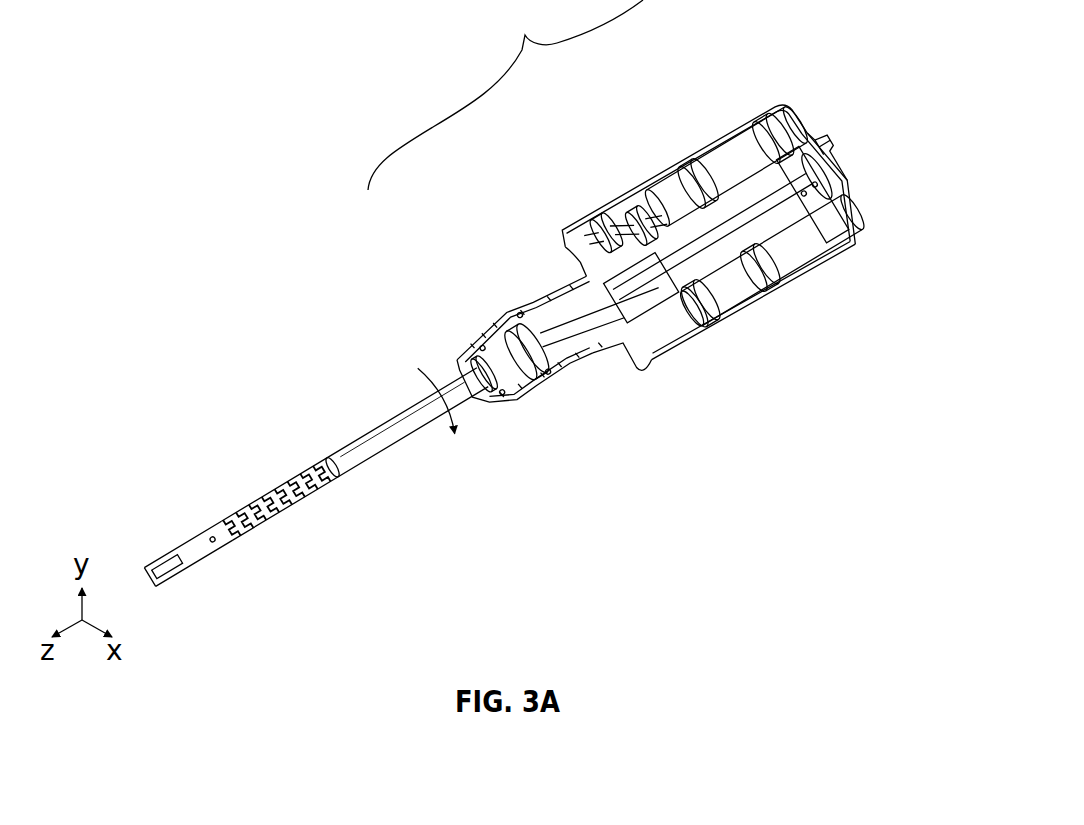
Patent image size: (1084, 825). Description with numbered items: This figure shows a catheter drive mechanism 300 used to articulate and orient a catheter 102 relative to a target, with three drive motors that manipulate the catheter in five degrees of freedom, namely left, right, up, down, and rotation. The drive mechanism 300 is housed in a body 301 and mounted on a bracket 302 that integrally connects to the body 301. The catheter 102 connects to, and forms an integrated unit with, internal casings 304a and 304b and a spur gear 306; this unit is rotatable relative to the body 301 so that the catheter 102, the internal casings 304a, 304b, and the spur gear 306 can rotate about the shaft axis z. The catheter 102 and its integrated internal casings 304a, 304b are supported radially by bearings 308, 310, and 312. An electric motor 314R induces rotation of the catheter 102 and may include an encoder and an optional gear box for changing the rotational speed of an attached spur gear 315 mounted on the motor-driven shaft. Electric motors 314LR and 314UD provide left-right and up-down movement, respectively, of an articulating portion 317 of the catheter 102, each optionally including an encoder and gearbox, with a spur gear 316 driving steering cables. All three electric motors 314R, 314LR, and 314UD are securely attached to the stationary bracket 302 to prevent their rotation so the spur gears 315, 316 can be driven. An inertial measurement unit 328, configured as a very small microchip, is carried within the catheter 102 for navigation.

The catheter drive mechanism 300 is at (525, 35).
The catheter 102 is at (368, 474).
The body 301 is at (793, 290).
The bracket 302 is at (832, 240).
The internal casing 304a is at (593, 357).
The internal casing 304b is at (826, 140).
The spur gear 306 is at (836, 147).
The bearing 308 is at (469, 337).
The bearing 310 is at (513, 313).
The bearing 312 is at (846, 168).
The electric motor 314LR is at (606, 206).
The electric motor 314UD is at (708, 165).
The electric motor 314R is at (727, 325).
The spur gear 315 is at (861, 250).
The spur gear 316 is at (778, 113).
The articulating portion 317 is at (250, 500).
The inertial measurement unit (IMU) 328 is at (178, 576).